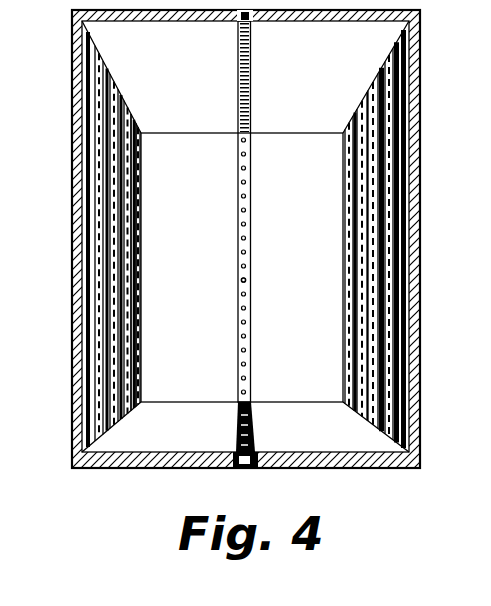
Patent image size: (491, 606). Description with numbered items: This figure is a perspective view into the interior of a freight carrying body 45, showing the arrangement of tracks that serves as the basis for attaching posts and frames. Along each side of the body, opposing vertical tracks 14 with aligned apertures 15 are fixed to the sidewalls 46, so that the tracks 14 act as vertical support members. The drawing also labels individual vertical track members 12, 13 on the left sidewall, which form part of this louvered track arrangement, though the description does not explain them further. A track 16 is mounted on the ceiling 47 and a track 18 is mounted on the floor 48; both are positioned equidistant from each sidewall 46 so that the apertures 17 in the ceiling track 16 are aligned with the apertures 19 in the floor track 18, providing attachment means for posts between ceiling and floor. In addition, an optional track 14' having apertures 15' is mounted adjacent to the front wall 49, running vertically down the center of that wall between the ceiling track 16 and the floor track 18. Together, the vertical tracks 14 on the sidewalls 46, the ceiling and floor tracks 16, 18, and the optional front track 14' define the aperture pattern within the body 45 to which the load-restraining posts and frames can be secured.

The wall panel slat 12 is at (140, 356).
The slat rib 13 is at (140, 334).
The vertical tracks 14 is at (246, 239).
The apertures 15 is at (246, 242).
The track 16 is at (237, 48).
The apertures 17 is at (251, 37).
The track 18 is at (238, 435).
The apertures 19 is at (247, 433).
The freight carrying body 45 is at (67, 237).
The sidewalls 46 is at (78, 432).
The ceiling 47 is at (186, 94).
The floor 48 is at (340, 443).
The front wall 49 is at (212, 219).
The optional track 14' is at (264, 211).
The apertures 15' is at (265, 279).